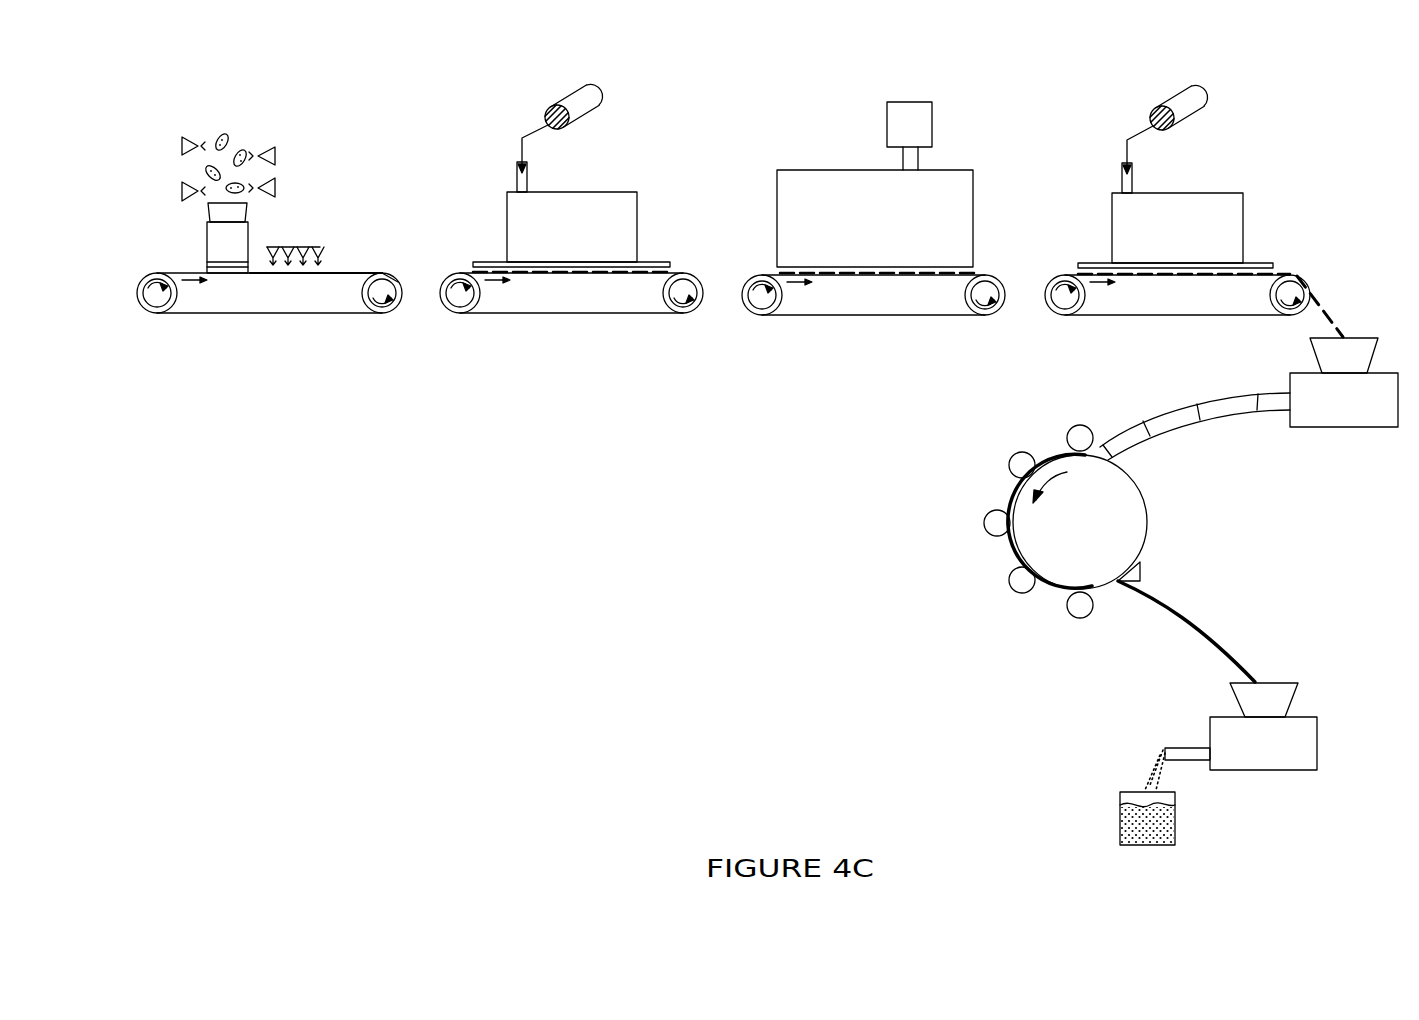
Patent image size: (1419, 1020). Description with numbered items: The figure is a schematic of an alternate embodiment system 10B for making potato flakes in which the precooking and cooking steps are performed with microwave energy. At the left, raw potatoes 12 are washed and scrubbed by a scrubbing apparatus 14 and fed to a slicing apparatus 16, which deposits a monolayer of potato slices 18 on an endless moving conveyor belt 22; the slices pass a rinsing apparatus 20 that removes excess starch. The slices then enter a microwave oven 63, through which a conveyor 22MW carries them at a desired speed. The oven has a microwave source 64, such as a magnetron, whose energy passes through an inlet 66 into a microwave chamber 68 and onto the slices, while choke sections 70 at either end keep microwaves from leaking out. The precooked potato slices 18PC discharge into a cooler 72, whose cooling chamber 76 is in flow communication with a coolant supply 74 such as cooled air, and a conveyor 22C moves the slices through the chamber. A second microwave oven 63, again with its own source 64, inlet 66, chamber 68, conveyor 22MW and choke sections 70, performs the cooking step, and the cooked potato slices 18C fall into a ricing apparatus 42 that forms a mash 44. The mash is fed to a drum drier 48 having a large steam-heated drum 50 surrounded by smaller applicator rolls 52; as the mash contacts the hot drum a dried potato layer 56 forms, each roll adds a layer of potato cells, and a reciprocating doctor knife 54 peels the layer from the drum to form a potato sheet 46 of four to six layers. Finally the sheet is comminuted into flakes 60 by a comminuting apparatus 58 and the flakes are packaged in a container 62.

The alternate embodiment system 10B is at (677, 546).
The potatoes 12 is at (228, 138).
The scrubbing apparatus 14 is at (277, 163).
The slicing apparatus 16 is at (213, 247).
The potato slices 18 is at (255, 272).
The precooked potato slices 18PC is at (668, 272).
The cooked potato slices 18C is at (1337, 313).
The rinsing apparatus 20 is at (298, 247).
The conveyor belt 22 is at (357, 272).
The conveyor 22MW is at (600, 315).
The conveyor 22C is at (873, 317).
The ricing apparatus 42 is at (1335, 418).
The mash 44 is at (1230, 418).
The potato sheet 46 is at (1197, 622).
The drum drier 48 is at (1132, 477).
The drum 50 is at (1135, 525).
The applicator rolls 52 is at (1076, 614).
The doctor knife 54 is at (1140, 570).
The dried potato layer 56 is at (1012, 552).
The comminuting apparatus 58 is at (1300, 718).
The flakes 60 is at (1150, 777).
The container 62 is at (1120, 830).
The microwave oven 63 is at (618, 192).
The microwave source 64 is at (588, 110).
The inlet 66 is at (528, 177).
The microwave chamber 68 is at (557, 236).
The choke sections 70 is at (486, 262).
The cooler 72 is at (830, 170).
The coolant supply 74 is at (923, 117).
The cooling chamber 76 is at (860, 221).